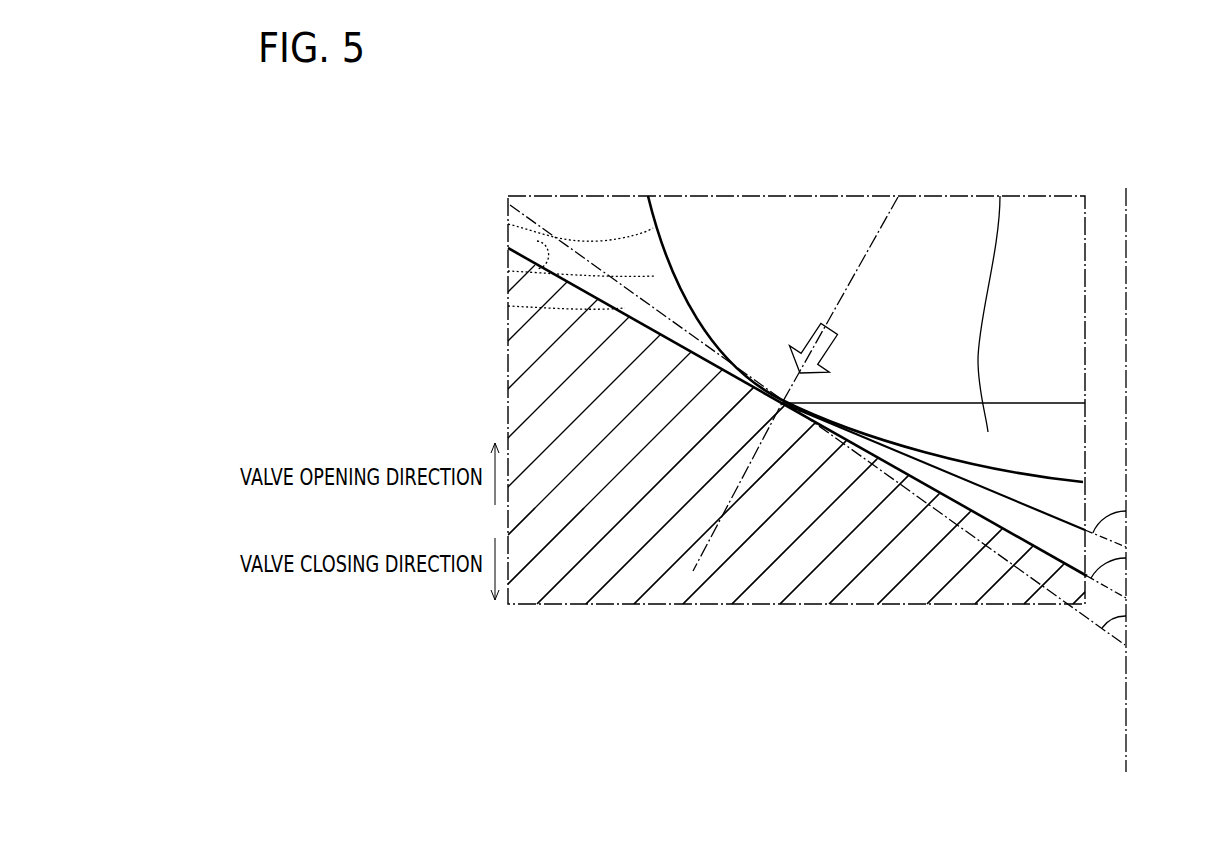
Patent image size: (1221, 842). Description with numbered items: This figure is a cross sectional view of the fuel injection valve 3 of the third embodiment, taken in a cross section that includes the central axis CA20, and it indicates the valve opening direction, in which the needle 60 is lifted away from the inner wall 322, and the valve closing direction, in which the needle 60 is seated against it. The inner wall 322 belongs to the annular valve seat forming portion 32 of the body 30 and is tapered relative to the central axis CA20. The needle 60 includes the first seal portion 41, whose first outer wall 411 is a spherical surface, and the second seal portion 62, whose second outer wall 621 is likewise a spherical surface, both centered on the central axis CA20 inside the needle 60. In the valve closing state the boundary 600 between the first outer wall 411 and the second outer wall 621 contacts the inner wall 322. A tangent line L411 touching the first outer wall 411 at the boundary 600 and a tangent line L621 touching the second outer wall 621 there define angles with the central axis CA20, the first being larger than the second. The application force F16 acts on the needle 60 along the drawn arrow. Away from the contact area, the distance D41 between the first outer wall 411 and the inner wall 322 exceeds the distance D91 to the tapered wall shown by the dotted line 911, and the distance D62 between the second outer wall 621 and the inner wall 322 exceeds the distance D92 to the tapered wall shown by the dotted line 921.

The fuel injection valve 3 is at (1028, 192).
The nozzle body 30 is at (756, 304).
The valve seat forming portion 32 is at (756, 304).
The inner wall 322 is at (537, 241).
The first seal portion 41 is at (1000, 196).
The first outer wall 411 is at (1048, 480).
The needle 60 is at (899, 184).
The second seal portion 62 is at (943, 240).
The second outer wall 621 is at (508, 224).
The dotted line 921 is at (516, 212).
The dotted line 911 is at (958, 476).
The boundary 600 is at (865, 403).
The distance D62 is at (508, 271).
The distance D92 is at (508, 306).
The distance D91 is at (1002, 490).
The distance D41 is at (1012, 472).
The application force F16 is at (808, 336).
The central axis CA20 is at (1129, 224).
The tangent line L411 is at (1090, 530).
The tangent line L621 is at (1112, 592).